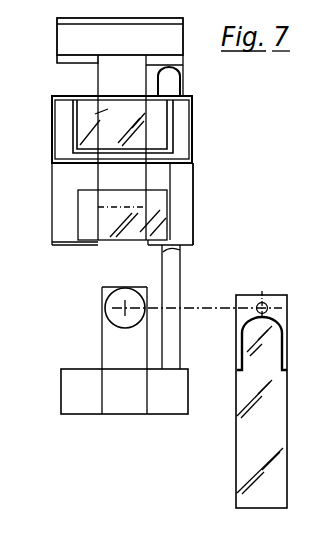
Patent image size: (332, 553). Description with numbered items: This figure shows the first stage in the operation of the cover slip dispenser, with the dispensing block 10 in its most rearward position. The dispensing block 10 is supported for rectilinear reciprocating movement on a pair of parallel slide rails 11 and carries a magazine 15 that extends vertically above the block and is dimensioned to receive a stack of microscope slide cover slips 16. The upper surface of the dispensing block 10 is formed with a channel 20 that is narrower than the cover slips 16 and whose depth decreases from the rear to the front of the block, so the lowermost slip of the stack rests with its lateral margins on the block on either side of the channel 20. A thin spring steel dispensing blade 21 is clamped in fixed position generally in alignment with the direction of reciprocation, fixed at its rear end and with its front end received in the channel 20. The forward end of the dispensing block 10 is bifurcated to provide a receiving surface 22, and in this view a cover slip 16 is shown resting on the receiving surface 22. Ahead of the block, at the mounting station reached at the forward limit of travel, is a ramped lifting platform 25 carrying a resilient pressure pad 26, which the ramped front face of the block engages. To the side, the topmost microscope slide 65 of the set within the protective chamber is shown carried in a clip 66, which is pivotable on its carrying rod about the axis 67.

The dispensing block 10 is at (194, 223).
The slide rails 11 is at (172, 273).
The magazine 15 is at (184, 134).
The cover slips 16 is at (100, 117).
The channel 20 is at (106, 175).
The dispensing blade 21 is at (110, 79).
The receiving surface 22 is at (182, 185).
The lifting platform 25 is at (115, 347).
The resilient pressure pad 26 is at (118, 299).
The topmost microscope slide 65 is at (278, 426).
The clip 66 is at (288, 329).
The axis 67 is at (265, 304).